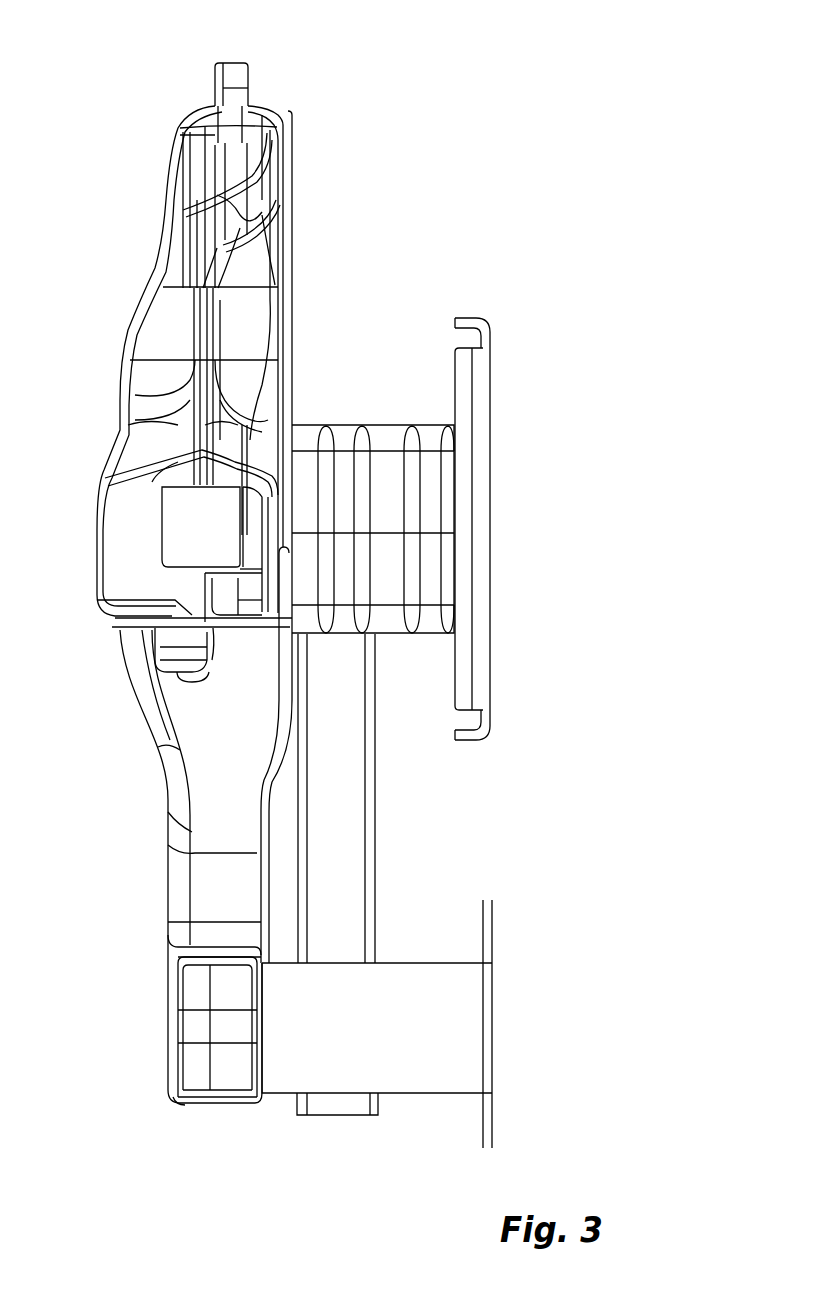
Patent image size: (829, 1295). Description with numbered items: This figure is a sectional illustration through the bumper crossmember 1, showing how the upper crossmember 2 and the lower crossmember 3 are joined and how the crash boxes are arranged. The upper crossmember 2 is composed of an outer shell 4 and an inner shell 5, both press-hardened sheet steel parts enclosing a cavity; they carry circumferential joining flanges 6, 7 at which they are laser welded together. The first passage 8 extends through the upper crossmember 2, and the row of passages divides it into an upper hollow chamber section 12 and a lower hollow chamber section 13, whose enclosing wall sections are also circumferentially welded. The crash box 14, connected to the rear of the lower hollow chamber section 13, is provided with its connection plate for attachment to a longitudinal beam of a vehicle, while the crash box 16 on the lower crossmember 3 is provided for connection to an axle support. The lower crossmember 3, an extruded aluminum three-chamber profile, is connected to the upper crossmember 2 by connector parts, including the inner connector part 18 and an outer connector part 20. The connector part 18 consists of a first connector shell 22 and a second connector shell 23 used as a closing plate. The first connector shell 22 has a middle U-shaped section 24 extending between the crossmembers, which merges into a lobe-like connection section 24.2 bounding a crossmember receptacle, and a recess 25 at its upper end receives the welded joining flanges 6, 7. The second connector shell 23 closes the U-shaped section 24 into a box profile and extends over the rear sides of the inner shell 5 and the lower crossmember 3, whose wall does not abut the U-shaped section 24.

The bumper crossmember 1 is at (352, 195).
The upper crossmember 2 is at (296, 160).
The lower crossmember 3 is at (205, 1104).
The outer shell 4 is at (147, 302).
The inner shell 5 is at (294, 246).
The joining flange 6 is at (215, 78).
The joining flange 7 is at (245, 78).
The first passage 8 is at (192, 362).
The upper hollow chamber section 12 is at (152, 100).
The lower hollow chamber section 13 is at (75, 437).
The crash box 14 is at (372, 425).
The crash box 16 is at (390, 1038).
The inner connector part 18 is at (152, 905).
The outer connector part 20 is at (350, 834).
The first connector shell 22 is at (182, 806).
The second connector shell 23 is at (273, 776).
The U-shaped section 24 is at (210, 830).
The connection section 24.2 is at (170, 1012).
The recess 25 is at (185, 673).